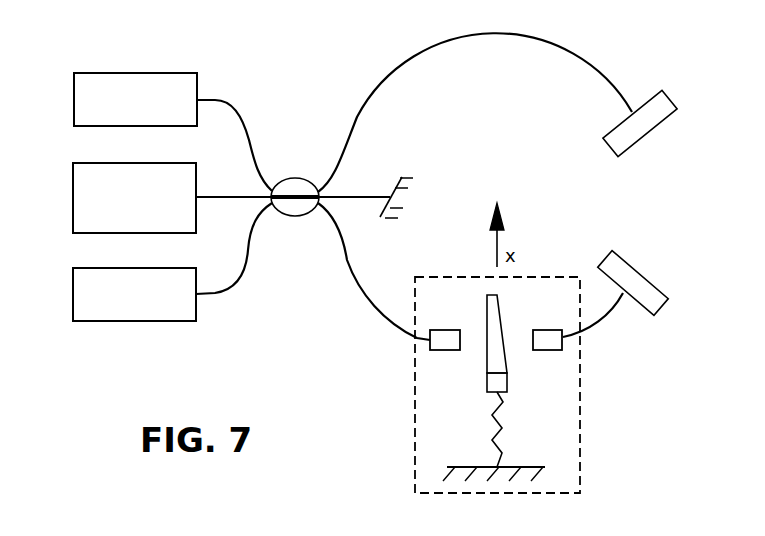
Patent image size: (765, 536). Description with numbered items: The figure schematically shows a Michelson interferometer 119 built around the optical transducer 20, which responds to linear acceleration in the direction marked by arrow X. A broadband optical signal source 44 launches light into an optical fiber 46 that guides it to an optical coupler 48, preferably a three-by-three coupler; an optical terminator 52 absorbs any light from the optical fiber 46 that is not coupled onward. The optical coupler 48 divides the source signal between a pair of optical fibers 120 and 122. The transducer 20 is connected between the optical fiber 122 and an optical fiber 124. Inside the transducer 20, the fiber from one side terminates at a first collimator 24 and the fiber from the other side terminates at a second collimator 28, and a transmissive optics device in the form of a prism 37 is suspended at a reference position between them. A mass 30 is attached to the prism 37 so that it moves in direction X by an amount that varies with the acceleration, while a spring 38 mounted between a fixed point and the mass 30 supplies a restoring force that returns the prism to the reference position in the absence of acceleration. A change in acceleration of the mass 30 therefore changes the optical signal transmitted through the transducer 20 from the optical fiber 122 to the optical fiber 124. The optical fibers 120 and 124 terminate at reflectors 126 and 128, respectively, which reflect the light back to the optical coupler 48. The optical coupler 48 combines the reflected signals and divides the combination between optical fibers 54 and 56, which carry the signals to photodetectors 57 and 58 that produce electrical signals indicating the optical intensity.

The optical transducer 20 is at (414, 368).
The first collimator 24 is at (442, 330).
The second collimator 28 is at (545, 350).
The mass 30 is at (487, 382).
The prism 37 is at (503, 318).
The spring 38 is at (500, 437).
The optical signal source 44 is at (73, 194).
The optical fiber 46 is at (210, 194).
The optical coupler 48 is at (288, 178).
The optical terminator 52 is at (435, 191).
The optical fiber 54 is at (208, 99).
The optical fiber 56 is at (208, 300).
The photodetector 57 is at (74, 99).
The photodetector 58 is at (73, 289).
The Michelson interferometer 119 is at (141, 345).
The optical fiber 120 is at (407, 67).
The optical fiber 122 is at (362, 288).
The optical fiber 124 is at (600, 325).
The reflector 126 is at (655, 128).
The reflector 128 is at (643, 273).